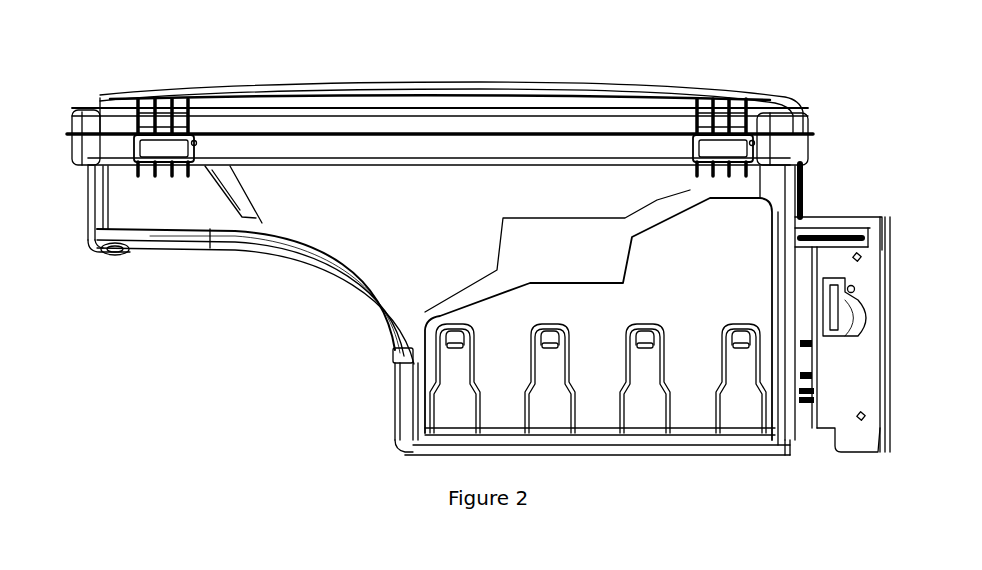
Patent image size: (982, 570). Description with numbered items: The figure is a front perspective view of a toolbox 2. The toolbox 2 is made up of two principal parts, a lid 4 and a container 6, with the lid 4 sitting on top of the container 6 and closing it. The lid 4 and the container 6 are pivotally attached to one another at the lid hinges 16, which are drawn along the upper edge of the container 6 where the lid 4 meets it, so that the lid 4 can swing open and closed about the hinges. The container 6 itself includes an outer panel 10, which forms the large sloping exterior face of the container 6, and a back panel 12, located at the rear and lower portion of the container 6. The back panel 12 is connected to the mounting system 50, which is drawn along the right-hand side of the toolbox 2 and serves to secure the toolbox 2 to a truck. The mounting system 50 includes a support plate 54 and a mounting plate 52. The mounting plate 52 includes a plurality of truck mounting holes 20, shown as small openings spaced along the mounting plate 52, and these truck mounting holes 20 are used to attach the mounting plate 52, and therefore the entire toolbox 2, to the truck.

The toolbox 2 is at (150, 67).
The lid 4 is at (500, 88).
The container 6 is at (198, 312).
The outer panel 10 is at (442, 262).
The back panel 12 is at (797, 440).
The lid hinges 16 is at (444, 201).
The truck mounting holes 20 is at (862, 413).
The mounting system 50 is at (856, 462).
The mounting plate 52 is at (838, 250).
The support plate 54 is at (819, 214).